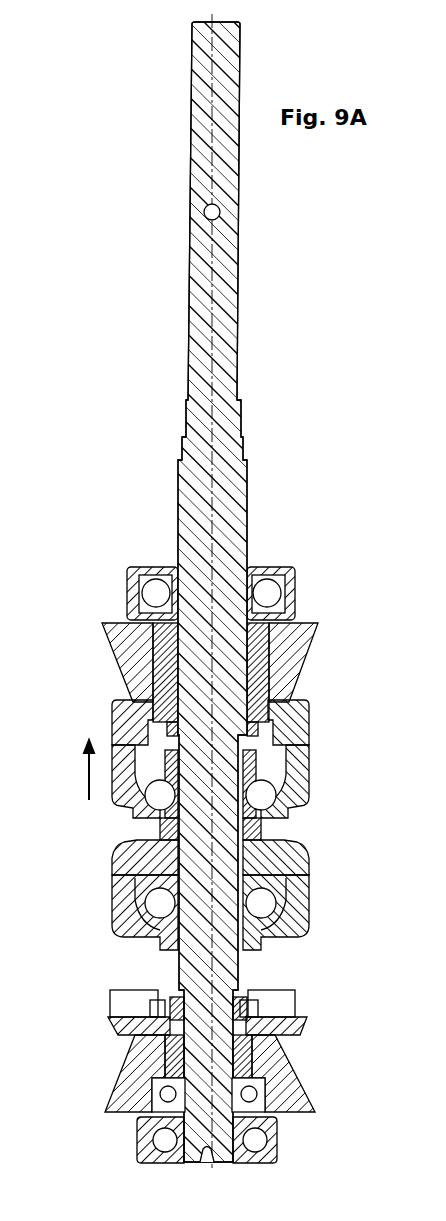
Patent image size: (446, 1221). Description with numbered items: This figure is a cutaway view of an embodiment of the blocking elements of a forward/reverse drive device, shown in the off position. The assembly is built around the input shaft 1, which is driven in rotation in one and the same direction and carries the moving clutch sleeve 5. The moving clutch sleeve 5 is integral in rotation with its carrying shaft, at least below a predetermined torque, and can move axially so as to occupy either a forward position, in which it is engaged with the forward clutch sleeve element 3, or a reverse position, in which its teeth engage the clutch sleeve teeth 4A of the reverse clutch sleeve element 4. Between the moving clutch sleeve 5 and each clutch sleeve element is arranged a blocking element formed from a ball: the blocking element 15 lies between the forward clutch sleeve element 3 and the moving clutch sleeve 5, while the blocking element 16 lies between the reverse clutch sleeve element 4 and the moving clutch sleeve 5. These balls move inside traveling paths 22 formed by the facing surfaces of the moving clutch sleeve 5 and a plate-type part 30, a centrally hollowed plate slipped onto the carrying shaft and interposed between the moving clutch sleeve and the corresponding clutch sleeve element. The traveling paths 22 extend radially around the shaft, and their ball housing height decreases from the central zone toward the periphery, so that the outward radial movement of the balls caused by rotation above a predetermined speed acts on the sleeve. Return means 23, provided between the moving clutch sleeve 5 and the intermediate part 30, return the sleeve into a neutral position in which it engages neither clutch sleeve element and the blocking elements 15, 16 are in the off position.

The input shaft 1 is at (242, 272).
The forward clutch sleeve element 3 is at (310, 659).
The plate-type part 30 is at (284, 771).
The blocking element 15 is at (290, 797).
The moving clutch sleeve 5 is at (294, 852).
The blocking element 16 is at (279, 893).
The traveling path 22 is at (158, 864).
The return means 23 is at (152, 885).
The clutch sleeve teeth 4A is at (109, 1004).
The reverse clutch sleeve element 4 is at (307, 1072).